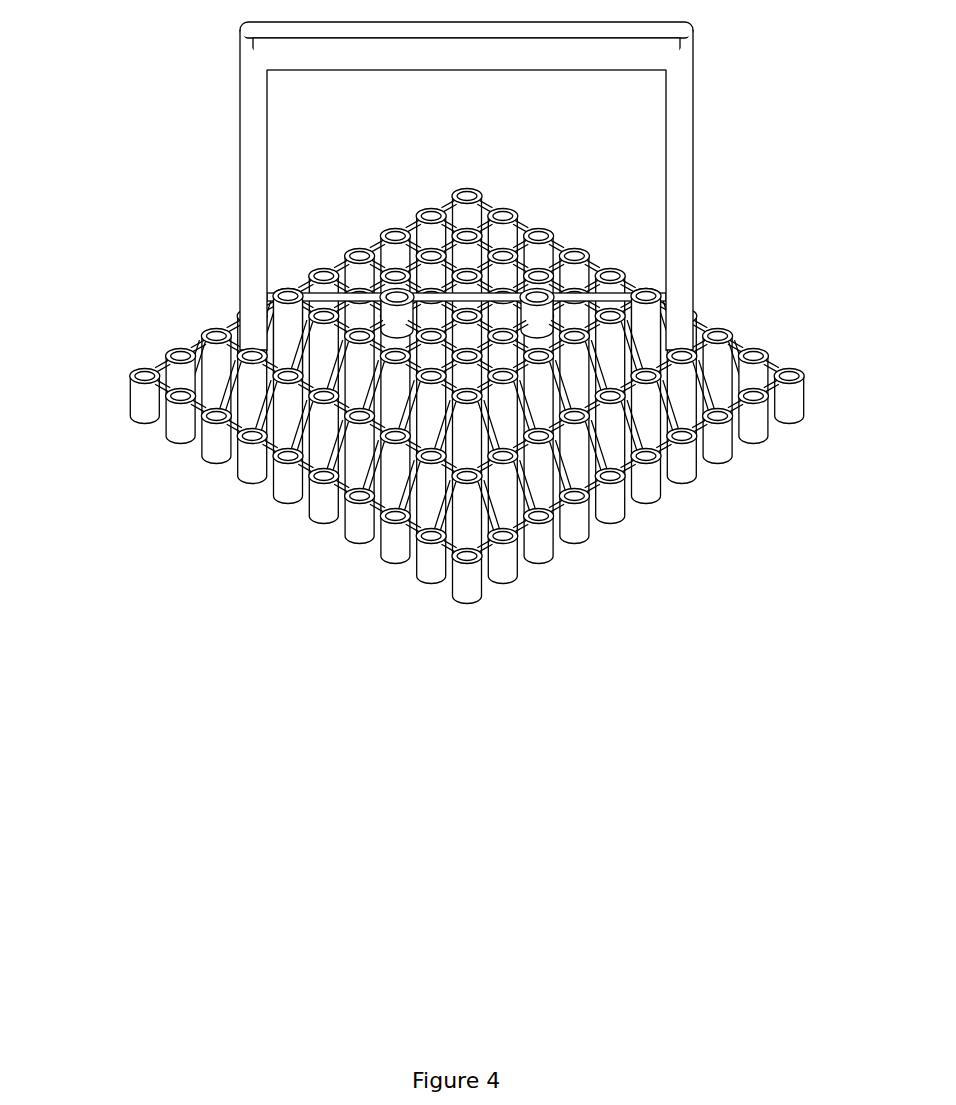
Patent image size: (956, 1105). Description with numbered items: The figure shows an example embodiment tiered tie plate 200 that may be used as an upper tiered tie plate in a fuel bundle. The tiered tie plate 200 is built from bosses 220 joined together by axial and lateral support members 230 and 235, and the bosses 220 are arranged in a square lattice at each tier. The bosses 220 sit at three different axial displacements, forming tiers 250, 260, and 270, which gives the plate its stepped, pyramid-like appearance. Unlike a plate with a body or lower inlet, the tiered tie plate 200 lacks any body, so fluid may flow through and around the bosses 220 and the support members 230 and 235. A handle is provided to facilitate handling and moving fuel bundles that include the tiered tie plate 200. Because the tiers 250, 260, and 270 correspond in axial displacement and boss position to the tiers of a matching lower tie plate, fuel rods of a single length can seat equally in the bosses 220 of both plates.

The tiered tie plate 200 is at (416, 358).
The bosses 220 is at (437, 557).
The axial support members 230 is at (588, 466).
The lateral support members 235 is at (588, 280).
The tier 250 is at (145, 371).
The tier 260 is at (205, 331).
The tier 270 is at (272, 293).